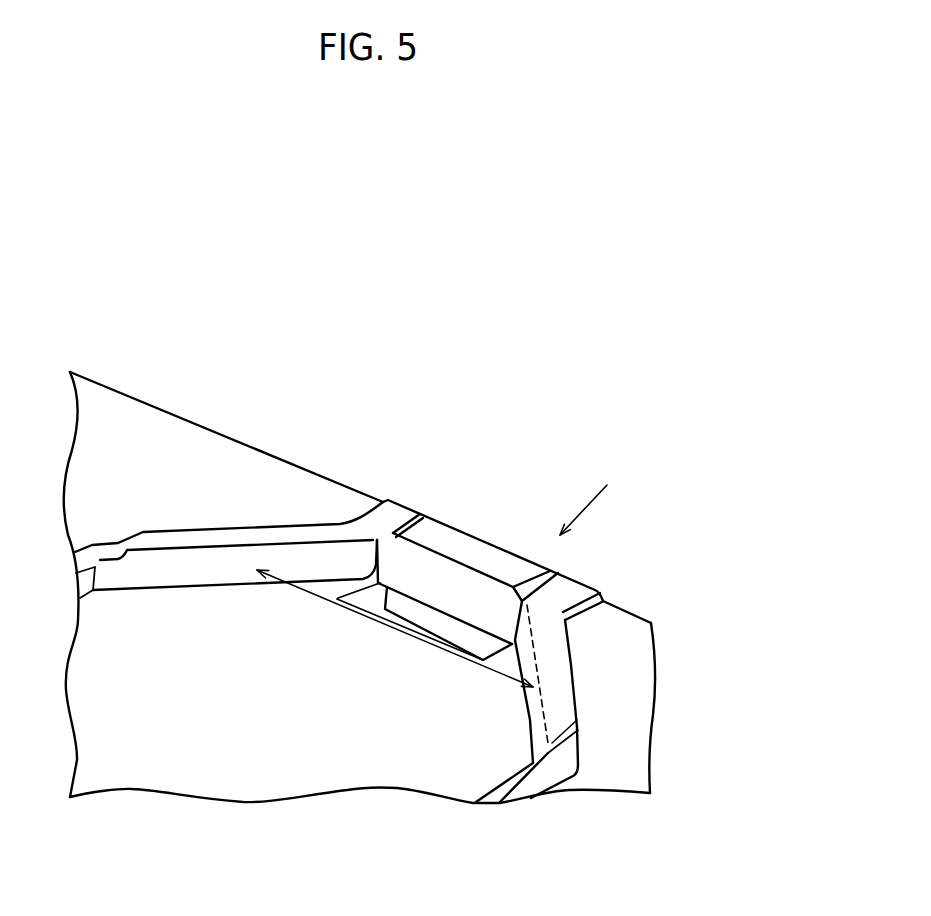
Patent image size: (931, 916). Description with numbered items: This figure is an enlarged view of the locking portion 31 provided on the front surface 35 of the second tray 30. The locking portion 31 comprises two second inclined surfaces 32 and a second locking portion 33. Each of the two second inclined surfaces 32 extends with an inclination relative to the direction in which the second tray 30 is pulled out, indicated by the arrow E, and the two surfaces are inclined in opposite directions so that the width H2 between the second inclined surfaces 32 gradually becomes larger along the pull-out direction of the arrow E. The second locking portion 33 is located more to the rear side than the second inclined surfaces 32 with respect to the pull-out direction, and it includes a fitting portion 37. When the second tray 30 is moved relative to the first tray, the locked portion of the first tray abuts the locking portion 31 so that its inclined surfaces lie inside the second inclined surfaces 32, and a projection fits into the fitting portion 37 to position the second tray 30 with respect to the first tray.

The second tray 30 is at (193, 416).
The locking portion 31 is at (580, 583).
The second inclined surfaces 32 is at (305, 557).
The second locking portion 33 is at (450, 578).
The front surface 35 is at (222, 470).
The fitting portion 37 is at (437, 635).
The arrow E is at (589, 494).
The width H2 is at (395, 628).